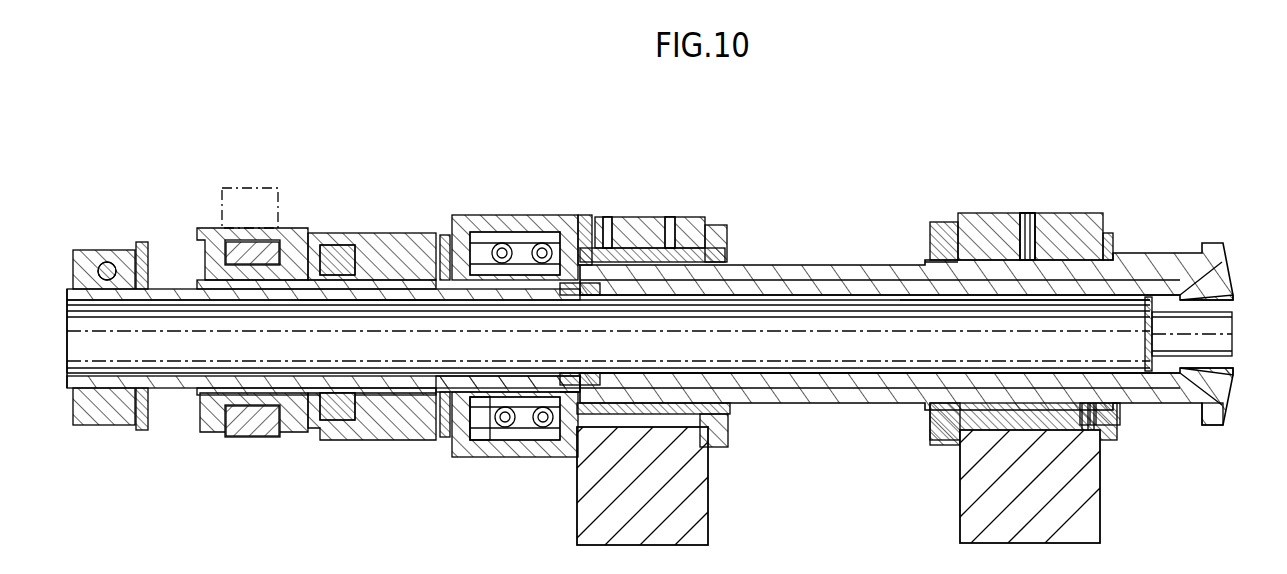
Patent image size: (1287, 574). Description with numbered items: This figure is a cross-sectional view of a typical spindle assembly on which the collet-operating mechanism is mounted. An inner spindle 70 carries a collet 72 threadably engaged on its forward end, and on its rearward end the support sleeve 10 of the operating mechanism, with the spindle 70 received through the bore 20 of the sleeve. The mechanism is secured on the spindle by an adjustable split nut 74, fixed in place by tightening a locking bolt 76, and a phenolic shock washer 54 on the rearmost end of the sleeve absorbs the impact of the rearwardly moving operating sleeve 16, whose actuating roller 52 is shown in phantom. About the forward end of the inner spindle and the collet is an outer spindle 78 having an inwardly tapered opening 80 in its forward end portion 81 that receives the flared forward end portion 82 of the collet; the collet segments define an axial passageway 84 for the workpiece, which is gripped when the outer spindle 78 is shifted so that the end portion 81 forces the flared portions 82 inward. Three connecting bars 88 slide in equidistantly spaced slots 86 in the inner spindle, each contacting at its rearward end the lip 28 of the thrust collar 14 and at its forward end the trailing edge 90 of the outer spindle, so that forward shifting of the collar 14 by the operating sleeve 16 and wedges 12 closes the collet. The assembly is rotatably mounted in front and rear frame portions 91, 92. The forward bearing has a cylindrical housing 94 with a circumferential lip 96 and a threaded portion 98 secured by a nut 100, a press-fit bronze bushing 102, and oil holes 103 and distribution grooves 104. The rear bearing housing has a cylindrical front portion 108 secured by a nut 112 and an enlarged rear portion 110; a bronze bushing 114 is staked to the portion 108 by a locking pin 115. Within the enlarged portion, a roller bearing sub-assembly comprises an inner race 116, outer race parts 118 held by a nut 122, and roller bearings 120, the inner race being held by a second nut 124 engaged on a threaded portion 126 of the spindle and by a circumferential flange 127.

The inner support spindle 10 is at (168, 420).
The wedge members 12 is at (340, 420).
The thrust collar 14 is at (385, 428).
The outer operating sleeve 16 is at (355, 228).
The bore 20 is at (174, 380).
The inwardly projecting circular lip 28 is at (430, 300).
The roller 52 is at (228, 186).
The phenolic shock washer 54 is at (145, 250).
The inner spindle 70 is at (60, 355).
The collet 72 is at (905, 300).
The adjustable split nut 74 is at (85, 405).
The locking bolt 76 is at (100, 260).
The outer spindle 78 is at (756, 268).
The inwardly tapered opening 80 is at (1228, 292).
The forward end portion 81 is at (1224, 404).
The flared forward end portion 82 is at (1240, 350).
The axial passageway 84 is at (1160, 343).
The slots 86 is at (625, 295).
The connecting bar 88 is at (508, 215).
The trailing edge 90 is at (586, 220).
The front frame portion 91 is at (1085, 505).
The rear frame portion 92 is at (708, 520).
The cylindrical housing 94 is at (930, 420).
The circumferential lip 96 is at (1110, 240).
The threaded portion 98 is at (930, 240).
The nut 100 is at (930, 445).
The bronze bushing 102 is at (925, 260).
The oil holes 103 is at (615, 228).
The distribution grooves 104 is at (985, 255).
The cylindrical front portion 108 is at (730, 410).
The enlarged rear portion 110 is at (550, 450).
The nut 112 is at (728, 435).
The bronze bushing 114 is at (685, 400).
The locking pin 115 is at (602, 250).
The inner race 116 is at (486, 440).
The outer race parts 118 is at (540, 430).
The roller bearings 120 is at (498, 243).
The nut 122 is at (462, 232).
The second nut 124 is at (452, 440).
The threaded portion 126 is at (470, 380).
The circumferential flange 127 is at (572, 390).